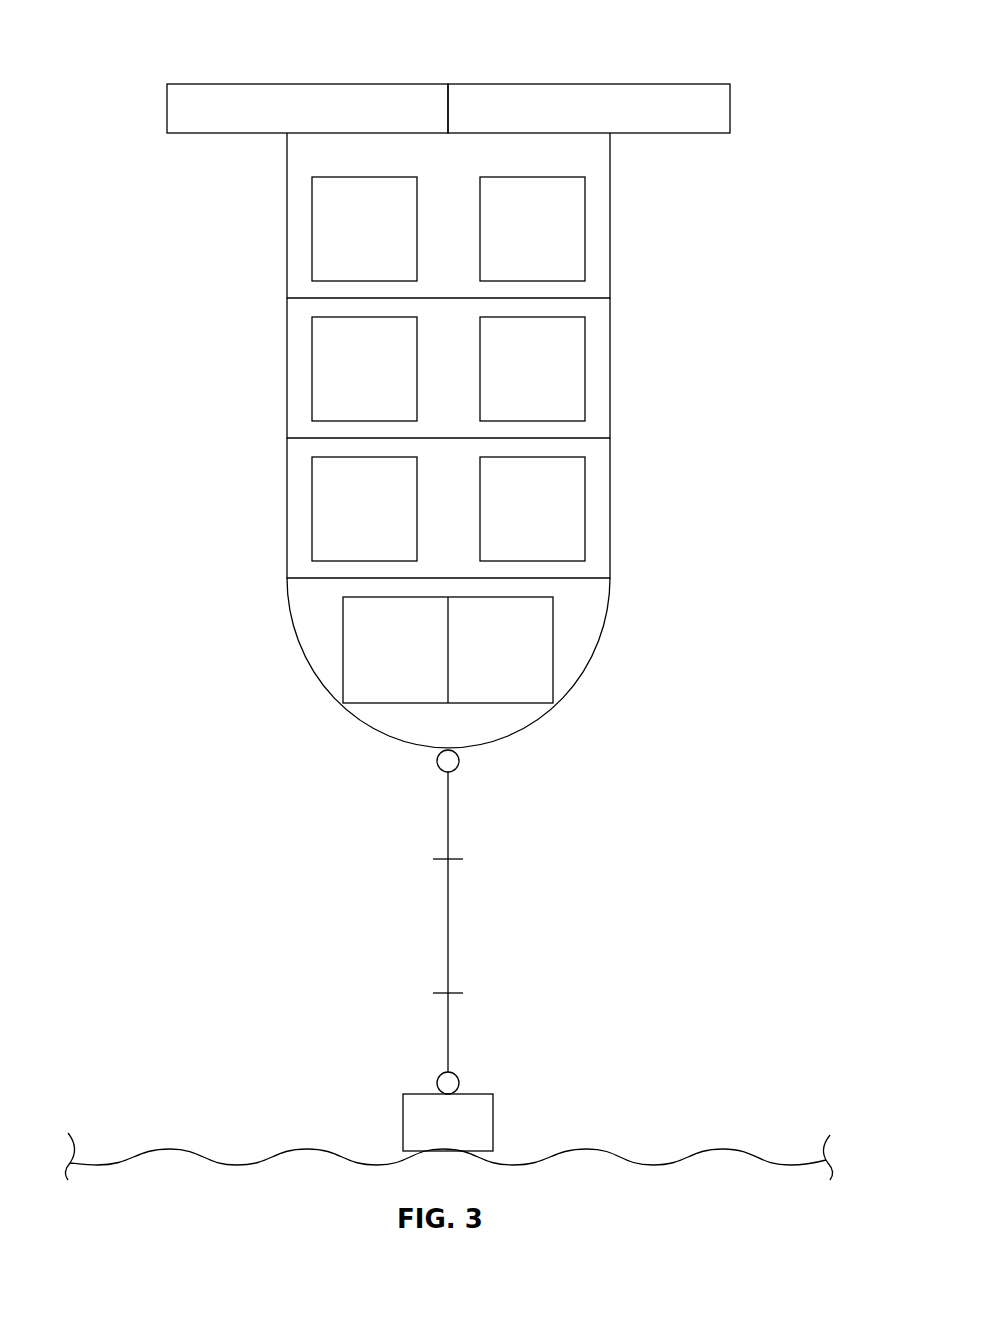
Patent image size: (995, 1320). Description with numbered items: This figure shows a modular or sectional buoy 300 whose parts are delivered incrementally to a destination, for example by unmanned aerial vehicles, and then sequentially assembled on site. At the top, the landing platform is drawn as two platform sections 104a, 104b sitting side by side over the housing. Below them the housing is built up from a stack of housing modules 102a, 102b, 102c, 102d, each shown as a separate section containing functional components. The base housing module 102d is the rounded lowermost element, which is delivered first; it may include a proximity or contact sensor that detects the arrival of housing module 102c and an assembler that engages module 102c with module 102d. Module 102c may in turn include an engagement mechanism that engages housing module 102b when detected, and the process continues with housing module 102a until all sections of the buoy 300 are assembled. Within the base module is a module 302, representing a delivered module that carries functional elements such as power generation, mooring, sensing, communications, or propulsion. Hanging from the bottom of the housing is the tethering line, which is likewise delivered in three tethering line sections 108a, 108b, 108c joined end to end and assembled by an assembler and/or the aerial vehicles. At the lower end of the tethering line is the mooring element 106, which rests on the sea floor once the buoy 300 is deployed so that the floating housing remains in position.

The modular or sectional buoy 300 is at (175, 38).
The platform section 104a is at (167, 97).
The platform section 104b is at (730, 97).
The housing module 102a is at (610, 235).
The housing module 102b is at (610, 372).
The housing module 102c is at (610, 508).
The base housing module 102d is at (459, 663).
The module 302 is at (343, 641).
The tethering line section 108a is at (448, 817).
The tethering line section 108b is at (448, 926).
The tethering line section 108c is at (448, 1040).
The mooring element 106 is at (493, 1110).